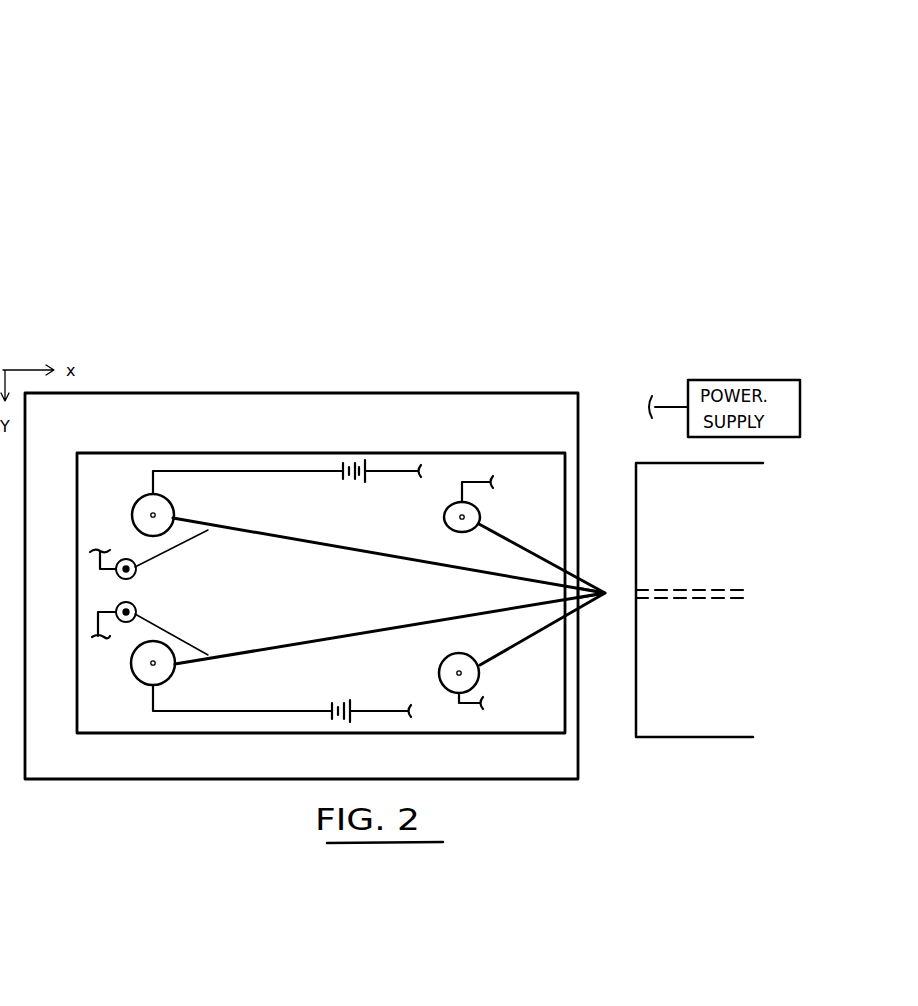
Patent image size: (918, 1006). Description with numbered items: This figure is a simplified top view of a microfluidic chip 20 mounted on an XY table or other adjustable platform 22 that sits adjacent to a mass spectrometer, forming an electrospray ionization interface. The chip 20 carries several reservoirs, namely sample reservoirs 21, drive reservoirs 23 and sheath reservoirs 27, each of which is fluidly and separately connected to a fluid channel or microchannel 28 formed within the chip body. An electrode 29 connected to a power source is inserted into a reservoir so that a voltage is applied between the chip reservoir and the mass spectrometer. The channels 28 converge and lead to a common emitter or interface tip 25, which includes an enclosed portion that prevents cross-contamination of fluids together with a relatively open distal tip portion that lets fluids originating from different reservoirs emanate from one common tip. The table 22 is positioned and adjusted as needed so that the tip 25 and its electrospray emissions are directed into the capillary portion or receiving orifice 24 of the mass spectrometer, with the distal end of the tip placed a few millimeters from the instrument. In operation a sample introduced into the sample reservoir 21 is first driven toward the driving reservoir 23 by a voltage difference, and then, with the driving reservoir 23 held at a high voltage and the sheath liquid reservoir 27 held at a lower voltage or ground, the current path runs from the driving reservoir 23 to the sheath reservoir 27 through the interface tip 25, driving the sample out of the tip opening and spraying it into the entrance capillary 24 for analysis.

The microfluidic chip 20 is at (537, 718).
The sample reservoir 21 is at (115, 537).
The XY table 22 is at (553, 766).
The drive reservoir 23 is at (147, 465).
The receiving orifice 24 is at (665, 580).
The interface tip 25 is at (628, 300).
The sheath reservoir 27 is at (468, 467).
The microchannel 28 is at (233, 535).
The electrode 29 is at (220, 468).